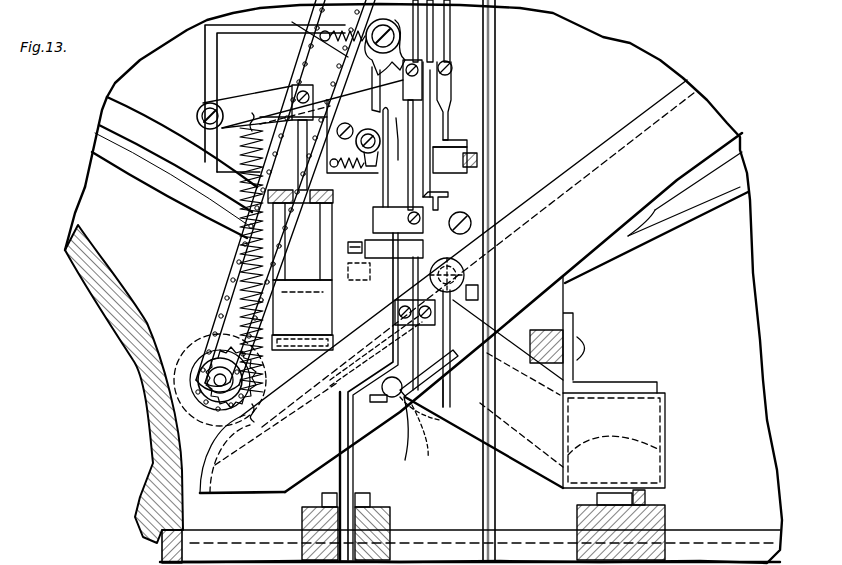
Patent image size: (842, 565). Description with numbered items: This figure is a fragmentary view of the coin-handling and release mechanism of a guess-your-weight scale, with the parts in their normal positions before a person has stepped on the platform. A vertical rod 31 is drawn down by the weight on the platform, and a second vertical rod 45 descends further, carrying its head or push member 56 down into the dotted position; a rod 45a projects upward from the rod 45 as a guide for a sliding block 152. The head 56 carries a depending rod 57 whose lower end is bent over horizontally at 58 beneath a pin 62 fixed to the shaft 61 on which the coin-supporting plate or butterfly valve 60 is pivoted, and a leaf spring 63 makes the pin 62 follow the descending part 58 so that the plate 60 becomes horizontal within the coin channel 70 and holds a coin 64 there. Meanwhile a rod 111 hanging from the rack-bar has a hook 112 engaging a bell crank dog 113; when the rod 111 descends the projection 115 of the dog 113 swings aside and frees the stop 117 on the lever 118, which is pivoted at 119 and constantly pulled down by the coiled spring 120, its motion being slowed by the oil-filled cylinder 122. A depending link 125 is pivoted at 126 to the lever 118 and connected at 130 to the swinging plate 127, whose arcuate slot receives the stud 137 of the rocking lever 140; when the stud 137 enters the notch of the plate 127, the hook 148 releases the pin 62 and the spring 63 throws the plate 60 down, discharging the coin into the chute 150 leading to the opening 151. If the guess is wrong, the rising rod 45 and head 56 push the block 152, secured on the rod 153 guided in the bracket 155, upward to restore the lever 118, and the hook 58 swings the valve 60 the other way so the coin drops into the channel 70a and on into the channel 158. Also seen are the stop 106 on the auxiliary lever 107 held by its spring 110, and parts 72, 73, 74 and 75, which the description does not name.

The rod 31 is at (496, 500).
The rod 45 is at (352, 460).
The rod 45a is at (382, 200).
The head or push member 56 is at (382, 279).
The rod 57 is at (424, 236).
The bent-over part or hook 58 is at (428, 439).
The coin-supporting plate or butterfly valve 60 is at (386, 355).
The pivot shaft 61 is at (399, 435).
The pin 62 is at (446, 412).
The leaf spring 63 is at (392, 398).
The coin 64 is at (365, 350).
The coin channel 70 is at (494, 286).
The channel 70a is at (268, 438).
The pitch circle 72 is at (193, 352).
The sprocket 73 is at (218, 386).
The sprocket hub 74 is at (212, 378).
The chain 75 is at (231, 279).
The stop 106 is at (450, 194).
The auxiliary lever 107 is at (455, 272).
The spring 110 is at (332, 30).
The rod 111 is at (420, 12).
The hook 112 is at (434, 40).
The bell crank lever or dog 113 is at (385, 41).
The projection 115 is at (305, 34).
The stop 117 is at (300, 84).
The lever 118 is at (266, 100).
The pivot 119 is at (197, 115).
The coiled spring 120 is at (243, 246).
The cylinder 122 is at (300, 270).
The depending link 125 is at (450, 90).
The pivotal connection 126 is at (452, 68).
The swinging plate 127 is at (433, 118).
The connection 130 is at (455, 140).
The stud or pin 137 is at (410, 180).
The up-and-down lever 140 is at (470, 157).
The hook 148 is at (420, 424).
The chute or passageway 150 is at (696, 450).
The opening 151 is at (417, 126).
The sliding block 152 is at (374, 221).
The rod 153 is at (479, 161).
The bracket 155 is at (418, 302).
The channel 158 is at (481, 552).